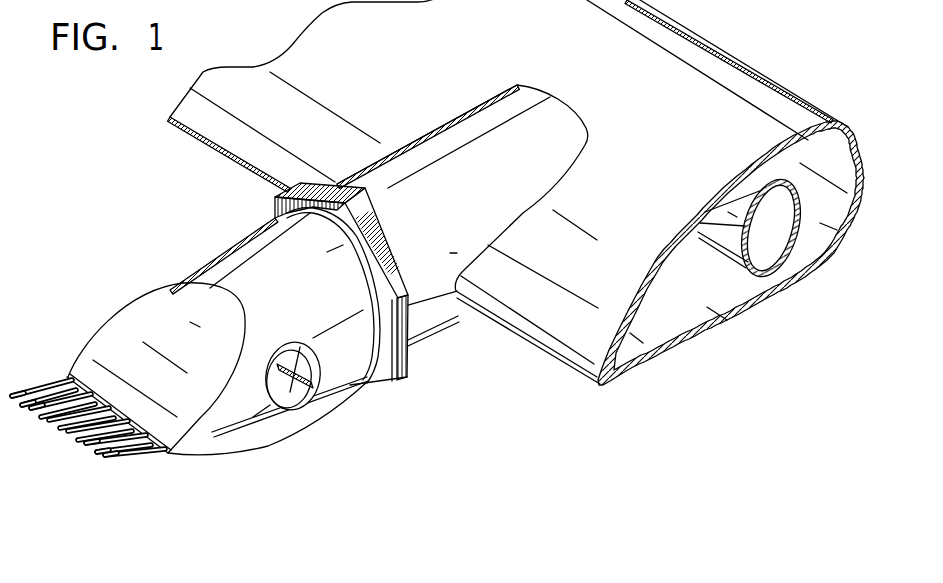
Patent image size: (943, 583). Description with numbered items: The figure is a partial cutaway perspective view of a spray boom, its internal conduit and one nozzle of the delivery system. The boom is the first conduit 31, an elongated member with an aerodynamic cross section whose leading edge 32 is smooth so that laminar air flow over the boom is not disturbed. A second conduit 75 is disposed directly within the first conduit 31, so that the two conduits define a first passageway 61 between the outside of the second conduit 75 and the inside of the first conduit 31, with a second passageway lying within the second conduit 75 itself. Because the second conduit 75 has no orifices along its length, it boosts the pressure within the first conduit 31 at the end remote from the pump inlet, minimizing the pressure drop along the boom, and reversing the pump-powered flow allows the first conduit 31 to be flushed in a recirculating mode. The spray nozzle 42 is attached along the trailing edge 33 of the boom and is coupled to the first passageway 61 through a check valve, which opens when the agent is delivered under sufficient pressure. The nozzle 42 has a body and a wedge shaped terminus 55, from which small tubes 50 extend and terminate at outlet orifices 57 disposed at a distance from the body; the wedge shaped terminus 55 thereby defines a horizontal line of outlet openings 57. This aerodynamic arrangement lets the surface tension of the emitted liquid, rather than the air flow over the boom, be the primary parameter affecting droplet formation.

The first conduit 31 is at (650, 370).
The leading edge 32 is at (795, 98).
The trailing edge 33 is at (543, 350).
The spray nozzle 42 is at (217, 457).
The small tubes 50 is at (60, 402).
The wedge shaped terminus 55 is at (138, 322).
The outlet orifices 57 is at (33, 425).
The first passageway 61 is at (707, 308).
The second conduit 75 is at (773, 272).